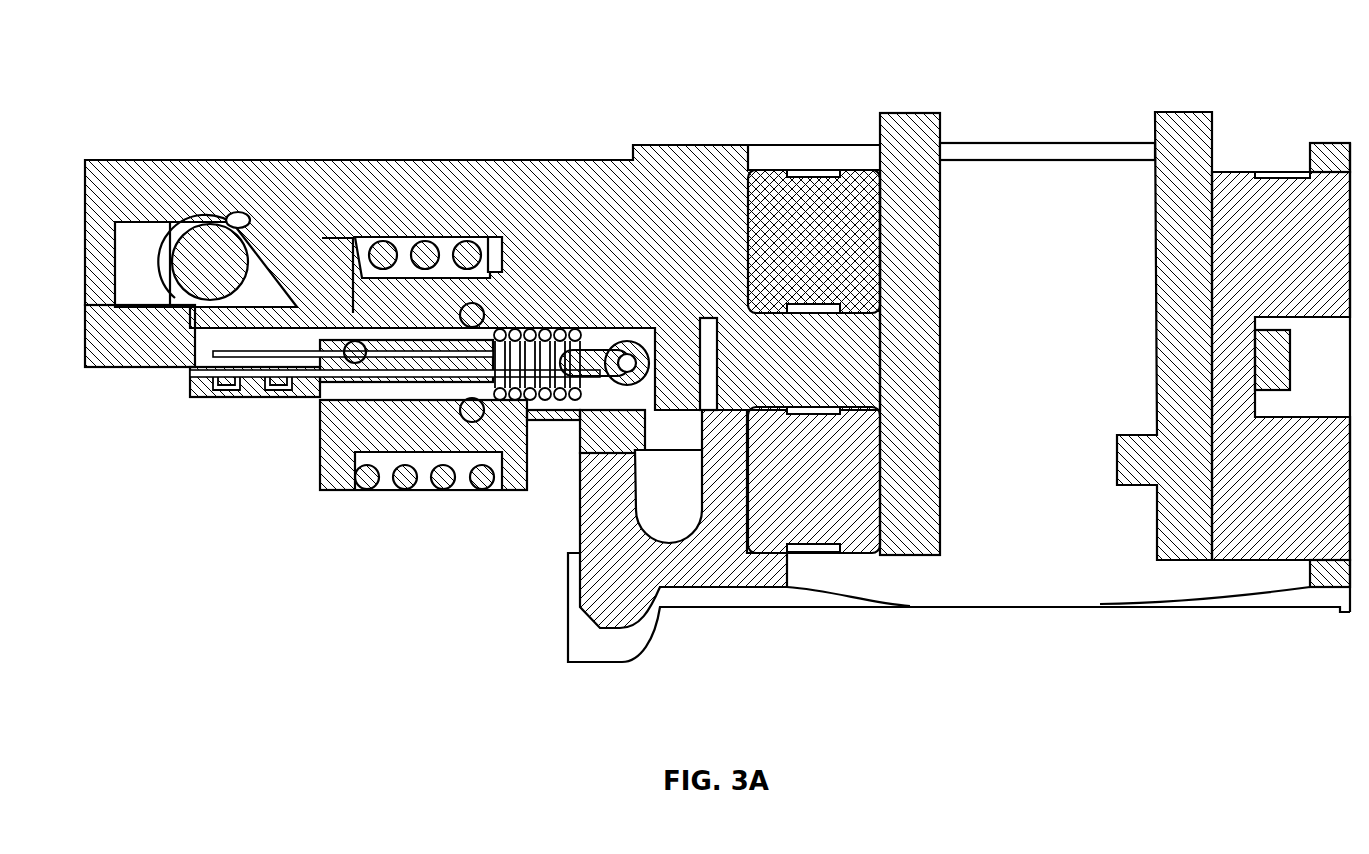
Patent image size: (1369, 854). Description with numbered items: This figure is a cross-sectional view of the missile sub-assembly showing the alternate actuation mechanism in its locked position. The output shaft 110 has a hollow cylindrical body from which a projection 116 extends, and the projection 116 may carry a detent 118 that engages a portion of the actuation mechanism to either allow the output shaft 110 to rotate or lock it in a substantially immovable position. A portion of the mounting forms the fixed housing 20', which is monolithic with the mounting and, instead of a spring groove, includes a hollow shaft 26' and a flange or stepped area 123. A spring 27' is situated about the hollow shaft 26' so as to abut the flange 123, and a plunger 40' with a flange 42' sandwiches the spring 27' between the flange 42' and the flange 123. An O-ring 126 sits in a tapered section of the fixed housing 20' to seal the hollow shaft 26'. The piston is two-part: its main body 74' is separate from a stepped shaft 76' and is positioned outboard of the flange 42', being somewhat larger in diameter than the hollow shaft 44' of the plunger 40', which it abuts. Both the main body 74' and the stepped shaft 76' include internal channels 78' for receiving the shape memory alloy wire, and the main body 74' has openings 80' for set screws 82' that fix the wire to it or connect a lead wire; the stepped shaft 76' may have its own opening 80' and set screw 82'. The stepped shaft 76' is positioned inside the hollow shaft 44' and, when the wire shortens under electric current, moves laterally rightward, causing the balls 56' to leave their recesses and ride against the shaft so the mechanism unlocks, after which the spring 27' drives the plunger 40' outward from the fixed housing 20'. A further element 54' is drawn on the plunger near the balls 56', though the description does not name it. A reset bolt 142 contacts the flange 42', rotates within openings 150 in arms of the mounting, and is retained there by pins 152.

The fixed housing 20' is at (482, 228).
The hollow shaft 26' is at (423, 482).
The spring 27' is at (397, 530).
The plunger 40' is at (614, 229).
The flange 42' is at (360, 186).
The hollow shaft 44' is at (586, 463).
The ball detent 54' is at (543, 210).
The balls 56' is at (457, 505).
The main body 74' is at (147, 384).
The stepped shaft 76' is at (385, 476).
The internal channels 78' is at (217, 378).
The openings 80' is at (220, 430).
The set screws 82' is at (267, 420).
The output shaft 110 is at (1196, 140).
The projection 116 is at (802, 345).
The detent 118 is at (712, 362).
The flange 123 is at (492, 236).
The O-ring 126 is at (420, 298).
The bolt 142 is at (213, 250).
The openings 150 is at (250, 228).
The pins 152 is at (135, 248).